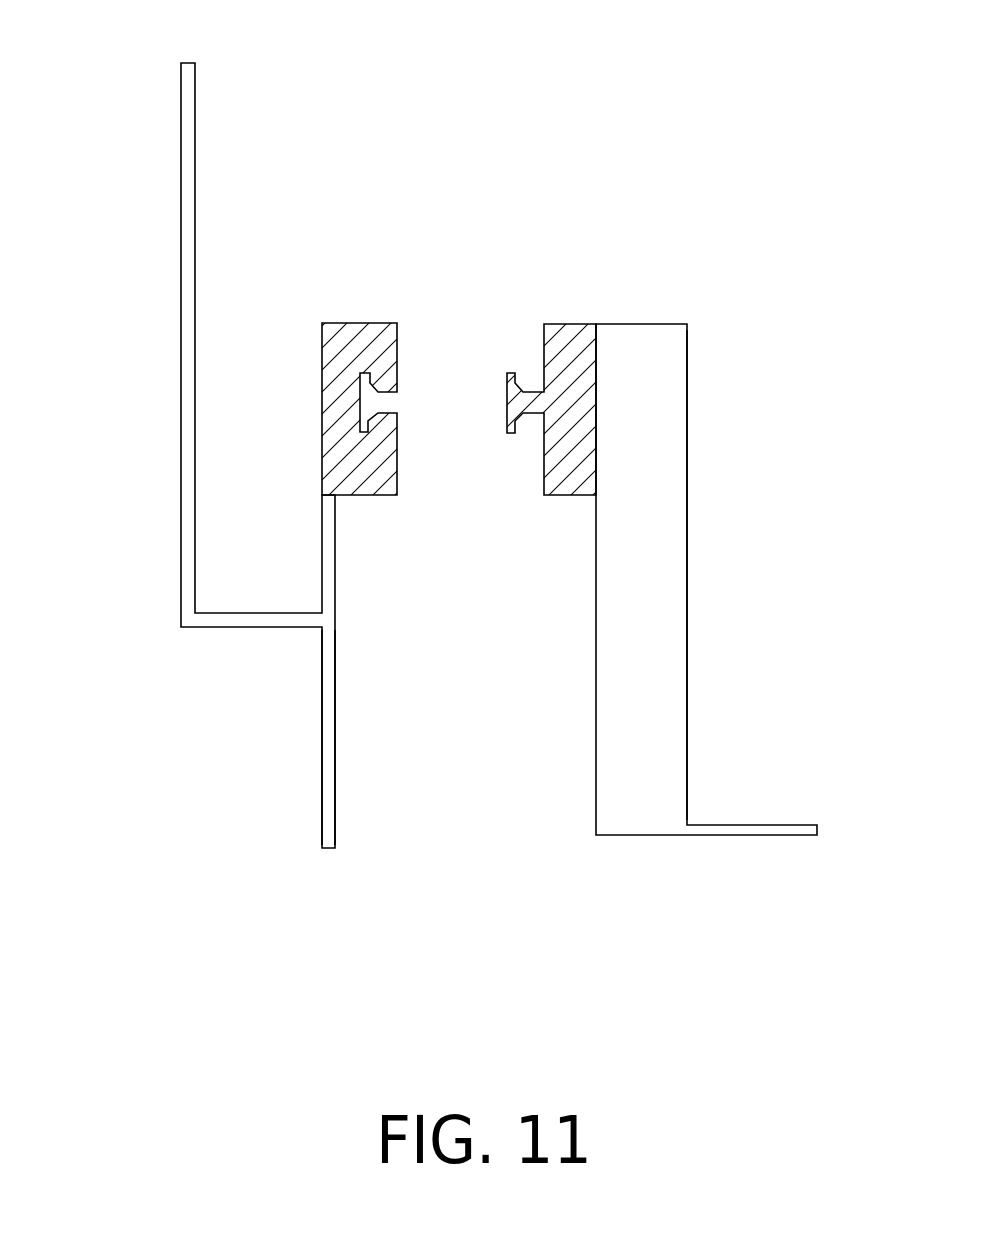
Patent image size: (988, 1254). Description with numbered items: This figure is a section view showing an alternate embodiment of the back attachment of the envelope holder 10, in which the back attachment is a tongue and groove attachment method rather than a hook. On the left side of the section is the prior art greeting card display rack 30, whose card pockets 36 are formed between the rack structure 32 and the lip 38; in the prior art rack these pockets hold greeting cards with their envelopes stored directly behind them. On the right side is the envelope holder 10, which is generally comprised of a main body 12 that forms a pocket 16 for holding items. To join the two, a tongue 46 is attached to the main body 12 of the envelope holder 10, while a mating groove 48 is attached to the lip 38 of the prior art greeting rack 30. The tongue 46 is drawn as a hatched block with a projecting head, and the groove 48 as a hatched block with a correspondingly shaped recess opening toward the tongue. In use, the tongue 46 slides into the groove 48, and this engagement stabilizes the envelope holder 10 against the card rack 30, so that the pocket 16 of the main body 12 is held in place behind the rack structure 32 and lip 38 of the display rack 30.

The envelope holder 10 is at (653, 878).
The main body 12 is at (595, 740).
The pocket 16 is at (643, 608).
The greeting card display rack 30 is at (163, 105).
The rack structure 32 is at (181, 367).
The card pockets 36 is at (248, 492).
The lip 38 is at (319, 572).
The tongue 46 is at (572, 363).
The groove 48 is at (365, 345).